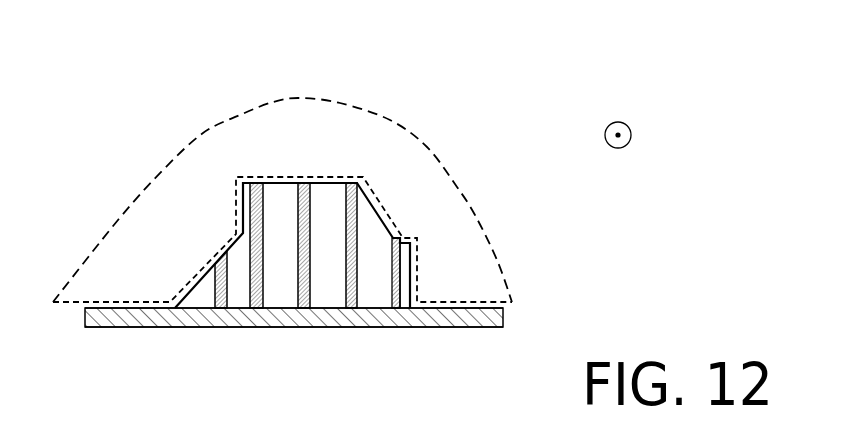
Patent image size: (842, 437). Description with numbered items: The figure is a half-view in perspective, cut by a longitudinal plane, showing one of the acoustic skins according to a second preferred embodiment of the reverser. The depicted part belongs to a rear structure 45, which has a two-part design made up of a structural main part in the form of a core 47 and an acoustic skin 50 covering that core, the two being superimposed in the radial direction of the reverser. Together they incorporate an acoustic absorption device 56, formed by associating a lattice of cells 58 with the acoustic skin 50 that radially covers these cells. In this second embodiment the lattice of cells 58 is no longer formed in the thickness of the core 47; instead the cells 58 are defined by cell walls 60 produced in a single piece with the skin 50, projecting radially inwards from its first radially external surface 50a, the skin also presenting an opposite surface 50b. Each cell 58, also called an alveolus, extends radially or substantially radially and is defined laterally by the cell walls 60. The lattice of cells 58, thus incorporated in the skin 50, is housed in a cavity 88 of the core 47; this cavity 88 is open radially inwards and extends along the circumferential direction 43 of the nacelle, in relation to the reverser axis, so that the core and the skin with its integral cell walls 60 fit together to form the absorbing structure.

The circumferential direction 43 is at (631, 133).
The rear structure 45 is at (405, 99).
The core 47 is at (428, 145).
The acoustic skin 50 is at (448, 328).
The first radially external surface 50a is at (447, 303).
The bottom surface of base plate 50b is at (330, 328).
The acoustic absorption device 56 is at (283, 180).
The cells 58 is at (283, 293).
The cell walls 60 is at (300, 218).
The cavity 88 is at (347, 213).